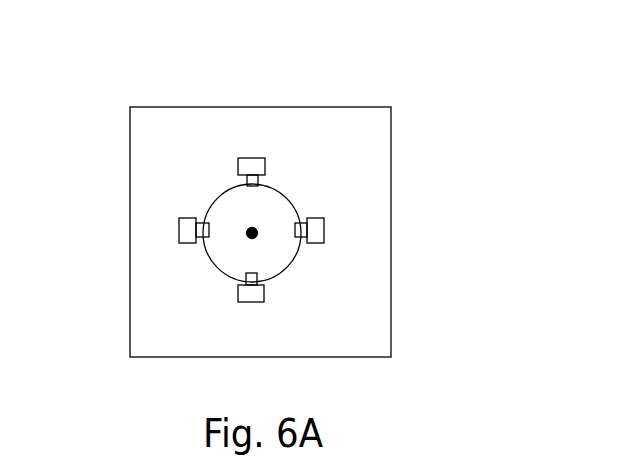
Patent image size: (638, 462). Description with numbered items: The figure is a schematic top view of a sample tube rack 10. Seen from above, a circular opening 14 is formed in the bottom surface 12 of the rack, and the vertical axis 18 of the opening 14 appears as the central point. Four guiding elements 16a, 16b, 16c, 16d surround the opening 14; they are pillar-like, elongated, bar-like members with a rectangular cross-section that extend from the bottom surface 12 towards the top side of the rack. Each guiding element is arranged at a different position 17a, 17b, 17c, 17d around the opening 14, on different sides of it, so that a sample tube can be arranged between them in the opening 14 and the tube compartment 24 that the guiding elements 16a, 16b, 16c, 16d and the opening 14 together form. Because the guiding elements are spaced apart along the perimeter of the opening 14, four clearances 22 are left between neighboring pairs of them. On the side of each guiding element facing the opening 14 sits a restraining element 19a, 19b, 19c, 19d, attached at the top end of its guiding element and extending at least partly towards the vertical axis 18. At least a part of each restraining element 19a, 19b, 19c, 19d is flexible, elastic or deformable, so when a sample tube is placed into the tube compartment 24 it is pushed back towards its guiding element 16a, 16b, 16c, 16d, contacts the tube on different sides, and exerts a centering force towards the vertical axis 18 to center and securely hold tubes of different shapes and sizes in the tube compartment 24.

The sample tube rack 10 is at (440, 104).
The bottom surface 12 is at (363, 310).
The opening 14 is at (300, 197).
The guiding element 16a is at (259, 156).
The guiding element 16b is at (324, 222).
The guiding element 16c is at (238, 297).
The guiding element 16d is at (179, 228).
The position 17a is at (241, 156).
The position 17b is at (326, 216).
The position 17c is at (247, 303).
The position 17d is at (183, 215).
The vertical axis 18 is at (248, 229).
The restraining element 19a is at (246, 185).
The restraining element 19b is at (297, 236).
The restraining element 19c is at (259, 279).
The restraining element 19d is at (204, 240).
The clearance 22 is at (284, 182).
The tube compartment 24 is at (300, 265).